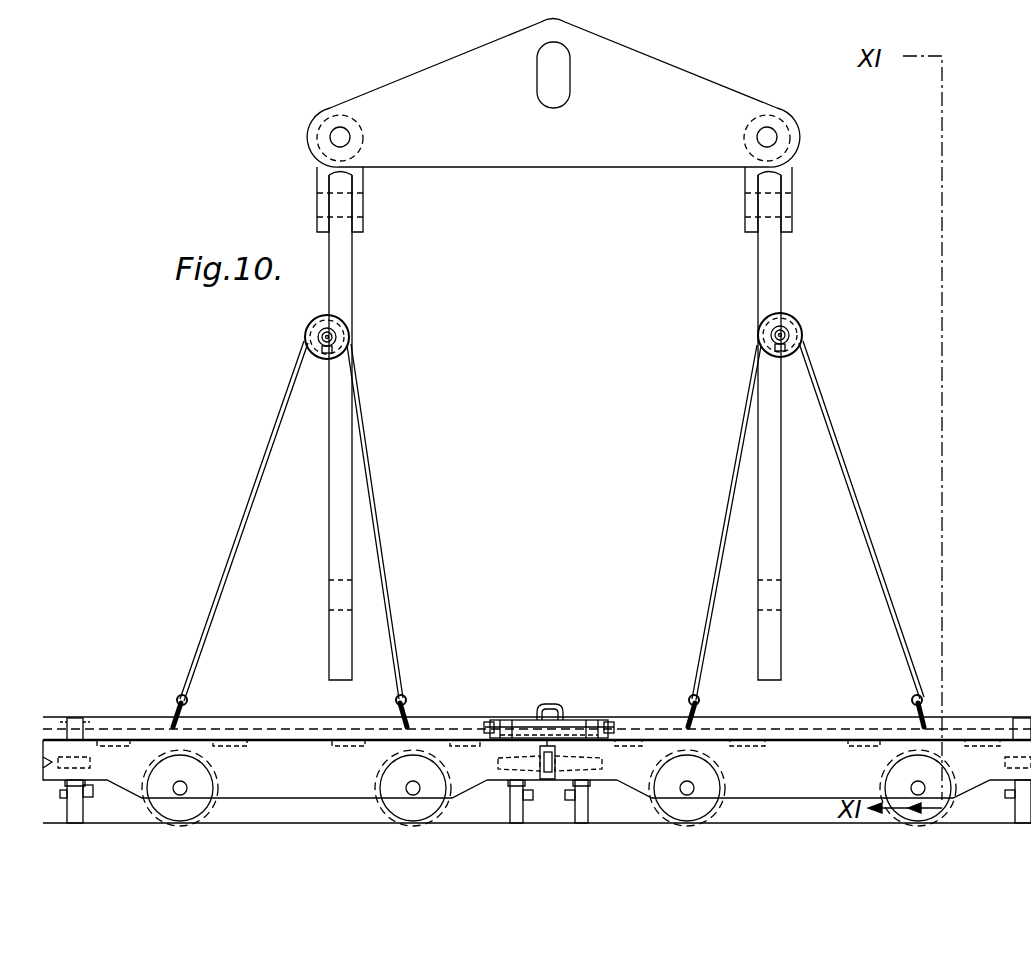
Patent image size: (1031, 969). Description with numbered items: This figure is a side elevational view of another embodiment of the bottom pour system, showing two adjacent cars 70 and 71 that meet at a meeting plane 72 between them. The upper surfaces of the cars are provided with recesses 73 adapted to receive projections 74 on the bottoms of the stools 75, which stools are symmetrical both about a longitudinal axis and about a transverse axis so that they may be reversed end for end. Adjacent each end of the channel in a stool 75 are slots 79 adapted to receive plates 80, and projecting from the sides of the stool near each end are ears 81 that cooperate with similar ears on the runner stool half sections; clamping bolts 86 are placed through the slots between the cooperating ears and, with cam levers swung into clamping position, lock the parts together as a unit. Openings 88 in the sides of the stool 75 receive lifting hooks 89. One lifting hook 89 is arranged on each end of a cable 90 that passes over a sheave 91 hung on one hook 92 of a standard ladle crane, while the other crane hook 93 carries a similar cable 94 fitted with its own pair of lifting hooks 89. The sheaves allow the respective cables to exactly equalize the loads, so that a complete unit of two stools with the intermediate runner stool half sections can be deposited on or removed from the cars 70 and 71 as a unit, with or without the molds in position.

The car 70 is at (470, 778).
The car 71 is at (637, 768).
The meeting plane 72 is at (550, 781).
The recesses 73 is at (349, 746).
The projections 74 is at (232, 742).
The stool 75 is at (285, 725).
The slots 79 is at (72, 718).
The plates 80 is at (85, 722).
The ears 81 is at (503, 718).
The clamping bolts 86 is at (556, 722).
The openings 88 is at (172, 728).
The lifting hooks 89 is at (187, 702).
The cable 90 is at (870, 535).
The sheave 91 is at (800, 333).
The hook 92 is at (770, 538).
The hook 93 is at (345, 528).
The cable 94 is at (243, 512).